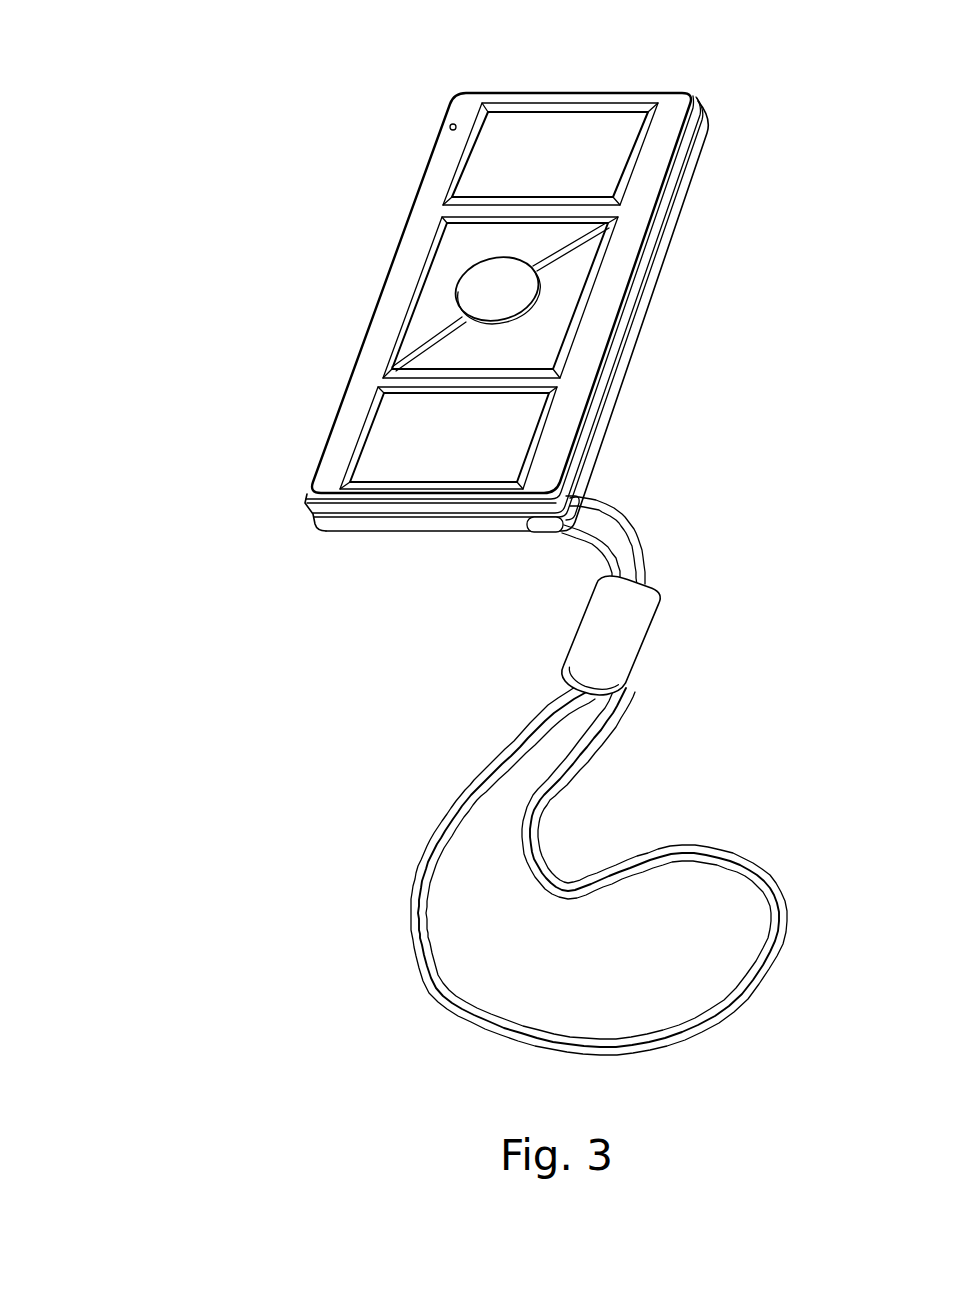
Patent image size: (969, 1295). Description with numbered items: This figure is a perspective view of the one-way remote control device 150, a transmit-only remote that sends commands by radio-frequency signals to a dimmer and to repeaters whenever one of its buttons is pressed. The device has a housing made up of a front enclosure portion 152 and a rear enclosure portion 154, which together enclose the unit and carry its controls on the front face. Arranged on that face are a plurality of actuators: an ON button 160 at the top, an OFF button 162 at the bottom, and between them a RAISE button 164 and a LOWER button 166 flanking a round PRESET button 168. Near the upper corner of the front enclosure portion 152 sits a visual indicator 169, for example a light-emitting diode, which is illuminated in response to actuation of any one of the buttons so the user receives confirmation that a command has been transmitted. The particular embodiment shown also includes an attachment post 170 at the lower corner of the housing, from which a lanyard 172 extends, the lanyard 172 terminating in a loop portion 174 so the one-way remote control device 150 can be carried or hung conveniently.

The one-way remote control device 150 is at (146, 235).
The front enclosure portion 152 is at (372, 350).
The rear enclosure portion 154 is at (687, 185).
The ON button 160 is at (600, 128).
The OFF button 162 is at (403, 445).
The RAISE button 164 is at (457, 260).
The LOWER button 166 is at (527, 332).
The PRESET button 168 is at (500, 287).
The visual indicator 169 is at (448, 124).
The attachment post 170 is at (554, 522).
The lanyard 172 is at (623, 640).
The loop portion 174 is at (623, 513).